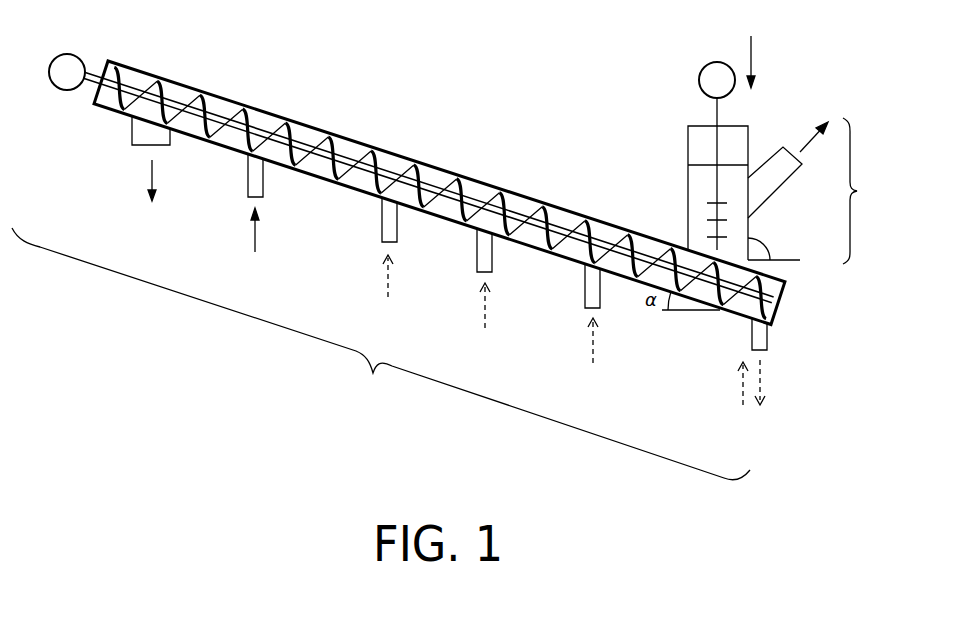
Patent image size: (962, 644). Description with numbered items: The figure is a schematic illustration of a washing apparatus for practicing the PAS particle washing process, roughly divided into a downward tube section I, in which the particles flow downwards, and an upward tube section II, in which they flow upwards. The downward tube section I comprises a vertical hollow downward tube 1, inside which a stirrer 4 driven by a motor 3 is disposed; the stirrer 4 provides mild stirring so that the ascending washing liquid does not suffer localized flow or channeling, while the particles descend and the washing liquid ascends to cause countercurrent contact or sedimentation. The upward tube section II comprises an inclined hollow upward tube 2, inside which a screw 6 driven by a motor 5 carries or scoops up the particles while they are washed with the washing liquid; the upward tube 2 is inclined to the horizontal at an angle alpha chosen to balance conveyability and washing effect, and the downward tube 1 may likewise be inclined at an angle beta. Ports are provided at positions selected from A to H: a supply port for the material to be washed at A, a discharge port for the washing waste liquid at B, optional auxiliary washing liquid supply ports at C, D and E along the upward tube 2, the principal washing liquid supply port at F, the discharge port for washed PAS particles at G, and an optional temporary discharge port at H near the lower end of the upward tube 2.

The downward tube 1 is at (688, 218).
The upward tube 2 is at (385, 150).
The motor 3 is at (698, 81).
The stirrer 4 is at (714, 187).
The motor 5 is at (68, 54).
The screw 6 is at (285, 129).
The supply port for a material to be washed A is at (746, 126).
The discharge port for a washing waste liquid B is at (781, 148).
The auxiliary supply port for washing liquid C is at (600, 306).
The auxiliary supply port for washing liquid D is at (492, 270).
The auxiliary supply port for washing liquid E is at (397, 241).
The principal supply port for a washing liquid F is at (264, 197).
The discharge port for washed PAS particles G is at (170, 143).
The temporary discharge port H is at (766, 346).
The downward tube section I is at (858, 191).
The upward tube section II is at (381, 354).